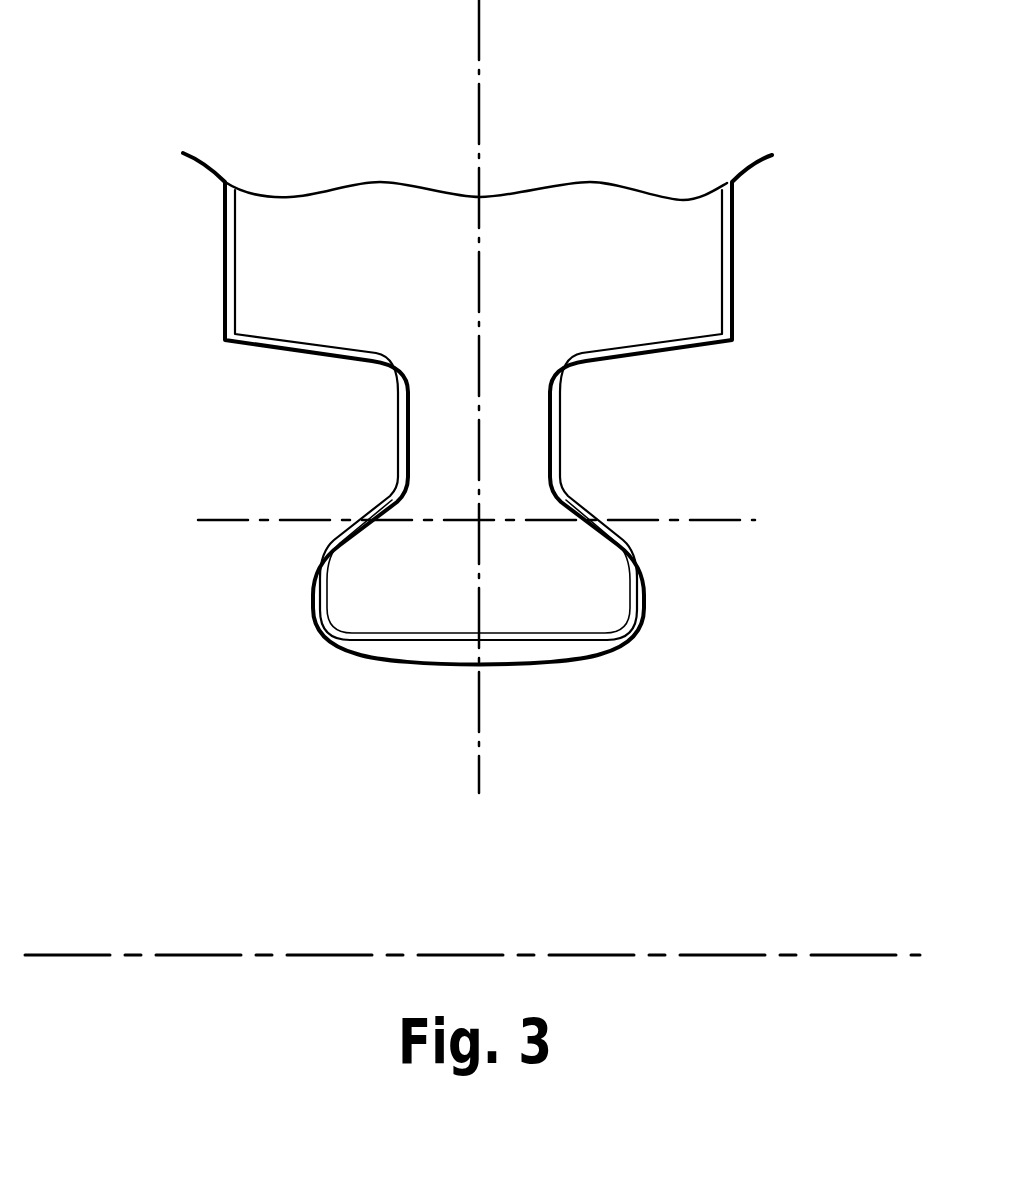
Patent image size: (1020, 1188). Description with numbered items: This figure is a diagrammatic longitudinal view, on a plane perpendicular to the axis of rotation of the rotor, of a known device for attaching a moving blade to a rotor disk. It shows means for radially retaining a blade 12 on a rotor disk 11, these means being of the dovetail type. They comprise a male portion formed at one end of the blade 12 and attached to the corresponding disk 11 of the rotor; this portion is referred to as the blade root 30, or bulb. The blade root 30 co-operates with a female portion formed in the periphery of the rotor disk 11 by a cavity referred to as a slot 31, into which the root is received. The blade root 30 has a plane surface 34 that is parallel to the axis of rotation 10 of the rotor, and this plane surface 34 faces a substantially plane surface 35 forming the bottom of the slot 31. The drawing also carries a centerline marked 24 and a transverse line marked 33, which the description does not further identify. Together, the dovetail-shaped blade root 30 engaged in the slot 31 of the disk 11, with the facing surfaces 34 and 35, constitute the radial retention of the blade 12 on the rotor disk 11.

The axis of rotation 10 is at (737, 955).
The rotor disk 11 is at (610, 799).
The blade 12 is at (644, 144).
The central axis 24 is at (478, 33).
The blade root 30 is at (610, 595).
The slot 31 is at (548, 648).
The transverse plane 33 is at (268, 520).
The plane surface 34 is at (270, 340).
The plane surface 35 is at (292, 355).